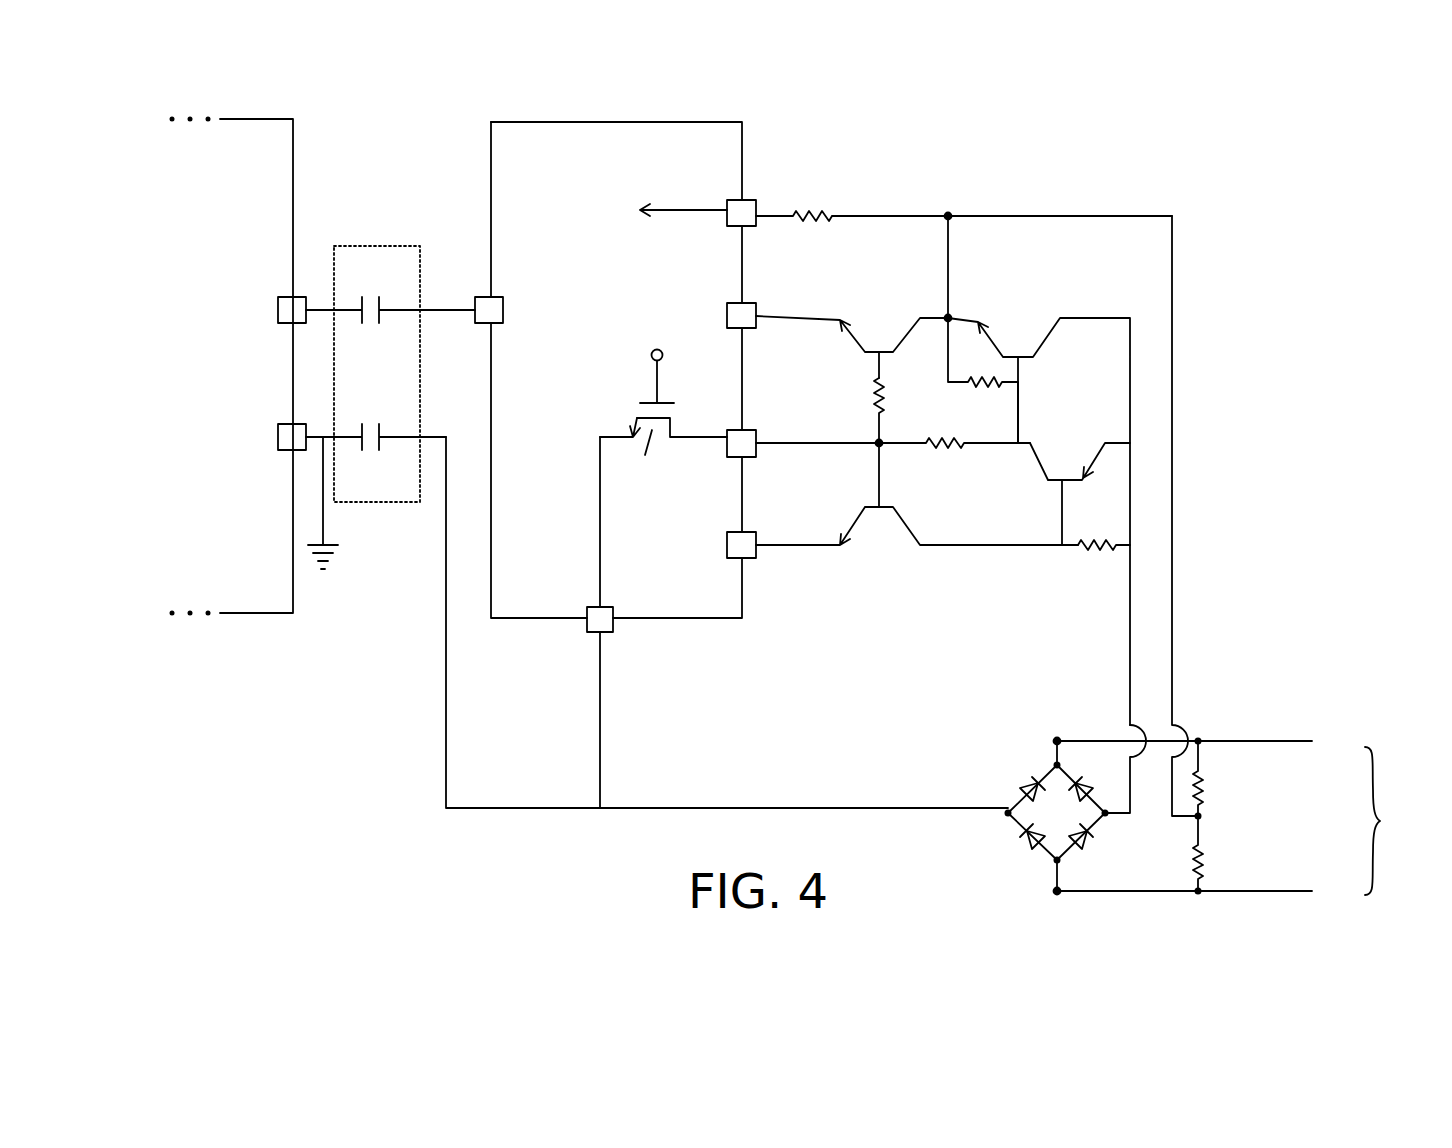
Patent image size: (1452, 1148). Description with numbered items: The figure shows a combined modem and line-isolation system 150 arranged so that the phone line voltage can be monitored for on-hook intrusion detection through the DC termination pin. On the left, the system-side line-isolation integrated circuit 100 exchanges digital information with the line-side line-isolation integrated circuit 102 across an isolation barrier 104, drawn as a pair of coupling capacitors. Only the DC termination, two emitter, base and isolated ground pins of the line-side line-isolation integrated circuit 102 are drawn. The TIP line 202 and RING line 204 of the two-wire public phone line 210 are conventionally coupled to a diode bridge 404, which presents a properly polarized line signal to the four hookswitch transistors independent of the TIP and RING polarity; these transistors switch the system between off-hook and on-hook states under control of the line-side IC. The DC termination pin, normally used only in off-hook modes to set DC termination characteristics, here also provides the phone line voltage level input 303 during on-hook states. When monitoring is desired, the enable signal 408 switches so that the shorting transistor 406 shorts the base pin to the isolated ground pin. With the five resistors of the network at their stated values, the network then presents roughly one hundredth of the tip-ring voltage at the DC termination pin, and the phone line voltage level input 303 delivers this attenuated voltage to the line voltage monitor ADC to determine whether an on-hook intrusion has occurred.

The system-side line-isolation integrated circuit 100 is at (253, 118).
The line-side line-isolation integrated circuit 102 is at (660, 123).
The isolation barrier 104 is at (363, 247).
The combined modem and line-isolation system 150 is at (368, 687).
The TIP line 202 is at (1247, 741).
The RING line 204 is at (1282, 891).
The phone line 210 is at (1312, 817).
The phone line voltage level input 303 is at (692, 212).
The diode bridge 404 is at (1023, 842).
The shorting transistor 406 is at (663, 613).
The enable signal 408 is at (653, 380).